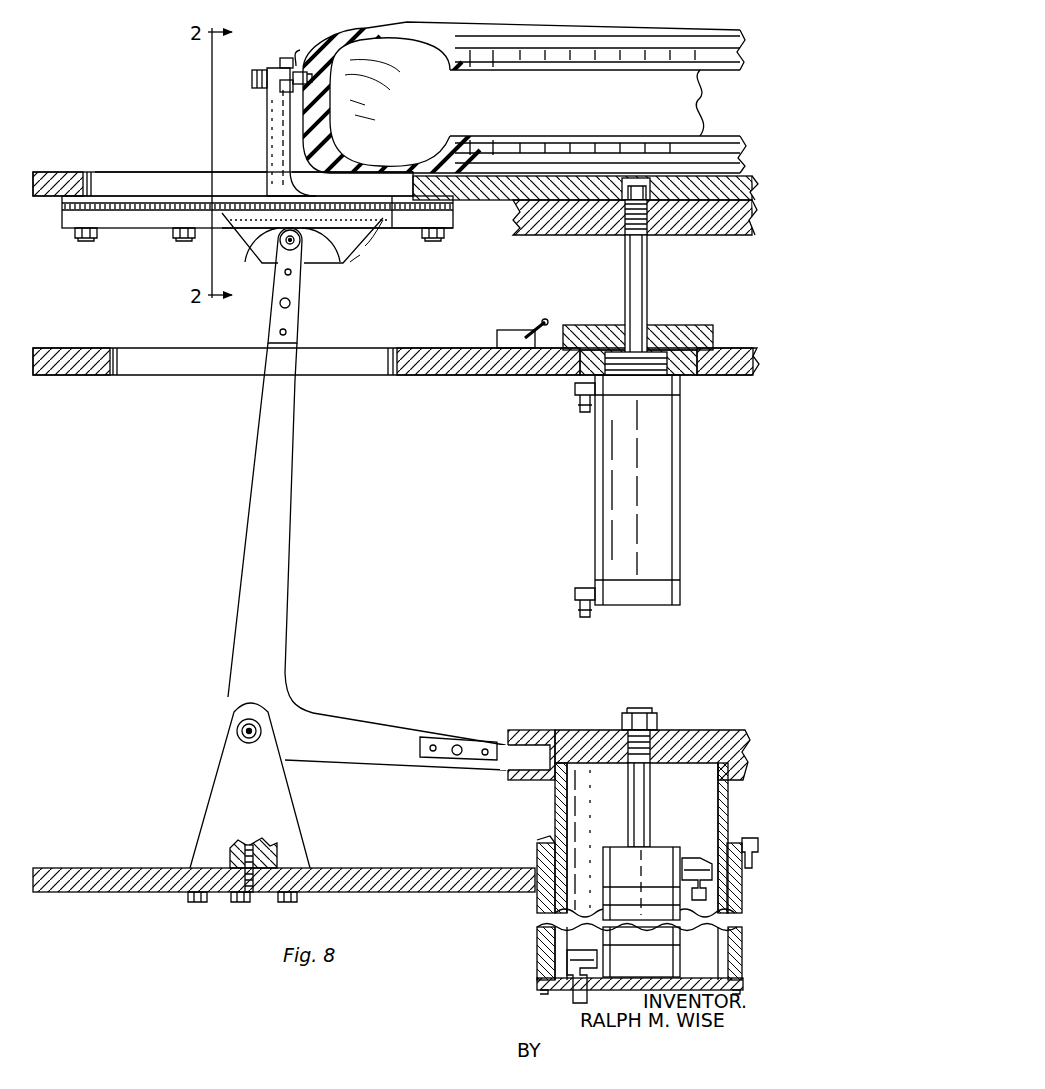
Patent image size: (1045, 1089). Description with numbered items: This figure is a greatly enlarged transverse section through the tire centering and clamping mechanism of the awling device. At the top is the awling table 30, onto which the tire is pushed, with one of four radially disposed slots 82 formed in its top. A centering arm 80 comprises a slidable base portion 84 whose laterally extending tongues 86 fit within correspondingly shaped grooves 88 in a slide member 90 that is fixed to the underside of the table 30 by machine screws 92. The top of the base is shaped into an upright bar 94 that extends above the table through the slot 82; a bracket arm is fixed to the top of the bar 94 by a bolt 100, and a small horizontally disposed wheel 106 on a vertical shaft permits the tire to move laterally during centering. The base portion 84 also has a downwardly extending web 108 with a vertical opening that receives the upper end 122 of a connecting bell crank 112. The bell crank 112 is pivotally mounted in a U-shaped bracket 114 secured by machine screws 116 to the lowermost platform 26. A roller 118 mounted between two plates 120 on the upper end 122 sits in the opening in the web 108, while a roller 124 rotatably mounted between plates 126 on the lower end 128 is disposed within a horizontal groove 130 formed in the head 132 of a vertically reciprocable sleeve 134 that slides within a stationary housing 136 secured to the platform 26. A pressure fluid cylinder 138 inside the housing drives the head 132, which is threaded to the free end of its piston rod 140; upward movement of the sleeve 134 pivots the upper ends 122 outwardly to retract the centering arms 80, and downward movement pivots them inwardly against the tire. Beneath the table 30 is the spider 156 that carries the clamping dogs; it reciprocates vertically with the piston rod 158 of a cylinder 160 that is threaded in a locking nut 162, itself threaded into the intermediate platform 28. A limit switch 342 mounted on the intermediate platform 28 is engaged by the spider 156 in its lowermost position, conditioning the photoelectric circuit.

The lowermost platform 26 is at (387, 868).
The intermediate platform 28 is at (70, 376).
The awling table 30 is at (78, 172).
The centering arm 80 is at (264, 118).
The radially disposed slot 82 is at (150, 172).
The slidable base portion 84 is at (340, 205).
The laterally extending tongue 86 is at (366, 246).
The groove 88 is at (453, 214).
The slide member 90 is at (453, 232).
The machine screw 92 is at (86, 243).
The upright bar 94 is at (272, 148).
The bolt 100 is at (283, 62).
The wheel 106 is at (296, 66).
The web 108 is at (362, 256).
The bell crank 112 is at (292, 700).
The U-shaped bracket 114 is at (290, 803).
The machine screw 116 is at (288, 904).
The roller 118 is at (260, 238).
The plate 120 is at (290, 290).
The upper end of bell crank 122 is at (294, 498).
The roller 124 is at (536, 730).
The plate 126 is at (470, 760).
The lower end of bell crank 128 is at (350, 764).
The horizontal groove 130 is at (512, 770).
The head 132 is at (587, 730).
The sleeve 134 is at (555, 818).
The stationary housing 136 is at (537, 905).
The pressure fluid cylinder 138 is at (653, 847).
The piston rod 140 is at (650, 790).
The spider 156 is at (565, 236).
The piston rod 158 is at (647, 272).
The cylinder 160 is at (680, 447).
The locking nut 162 is at (698, 326).
The limit switch 342 is at (497, 338).